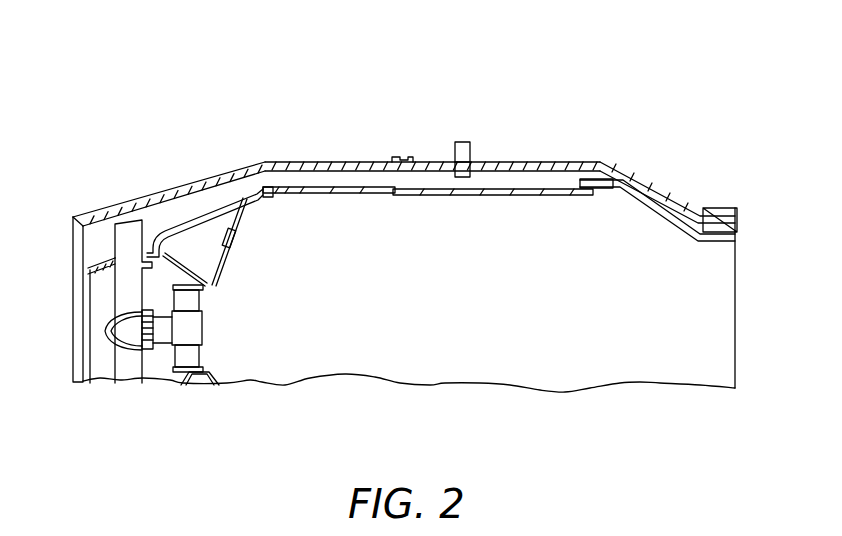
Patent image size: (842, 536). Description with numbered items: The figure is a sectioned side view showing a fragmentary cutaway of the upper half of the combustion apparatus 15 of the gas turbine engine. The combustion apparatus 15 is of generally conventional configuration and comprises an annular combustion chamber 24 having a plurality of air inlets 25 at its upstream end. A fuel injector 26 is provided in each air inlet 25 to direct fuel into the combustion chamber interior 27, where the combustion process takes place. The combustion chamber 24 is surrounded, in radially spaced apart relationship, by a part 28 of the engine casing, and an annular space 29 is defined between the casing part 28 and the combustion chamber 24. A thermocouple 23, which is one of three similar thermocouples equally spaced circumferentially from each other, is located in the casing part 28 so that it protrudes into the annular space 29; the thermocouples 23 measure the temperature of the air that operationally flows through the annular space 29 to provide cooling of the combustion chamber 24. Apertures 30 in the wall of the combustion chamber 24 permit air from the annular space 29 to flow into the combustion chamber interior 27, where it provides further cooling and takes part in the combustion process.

The combustion apparatus 15 is at (318, 123).
The thermocouple 23 is at (470, 147).
The annular combustion chamber 24 is at (563, 180).
The air inlet 25 is at (102, 368).
The fuel injector 26 is at (202, 330).
The combustion chamber interior 27 is at (462, 315).
The casing part 28 is at (352, 165).
The annular space 29 is at (268, 182).
The apertures 30 is at (413, 194).